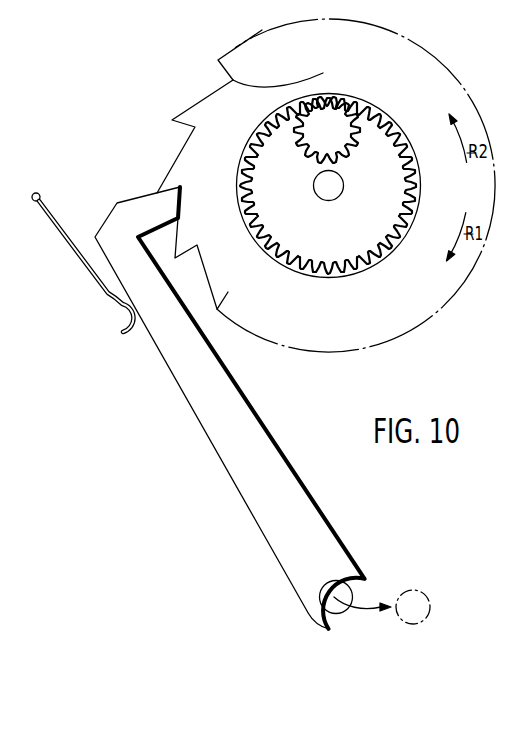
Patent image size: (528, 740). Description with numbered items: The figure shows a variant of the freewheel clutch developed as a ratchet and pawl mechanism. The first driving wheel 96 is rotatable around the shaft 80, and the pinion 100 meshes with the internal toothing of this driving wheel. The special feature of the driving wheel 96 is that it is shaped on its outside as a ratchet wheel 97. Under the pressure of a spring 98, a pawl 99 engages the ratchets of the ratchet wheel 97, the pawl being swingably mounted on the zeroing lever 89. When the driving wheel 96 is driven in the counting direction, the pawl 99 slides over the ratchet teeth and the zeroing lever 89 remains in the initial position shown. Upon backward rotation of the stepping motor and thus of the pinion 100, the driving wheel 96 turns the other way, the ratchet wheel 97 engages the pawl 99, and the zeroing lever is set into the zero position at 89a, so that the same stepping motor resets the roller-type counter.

The shaft 80 is at (319, 186).
The pinion 100 is at (310, 133).
The ratchet wheel 97 is at (235, 63).
The first driving wheel 96 is at (226, 80).
The spring 98 is at (86, 264).
The pawl 99 is at (135, 210).
The zeroing lever 89 is at (327, 600).
The zero position 89a is at (412, 592).